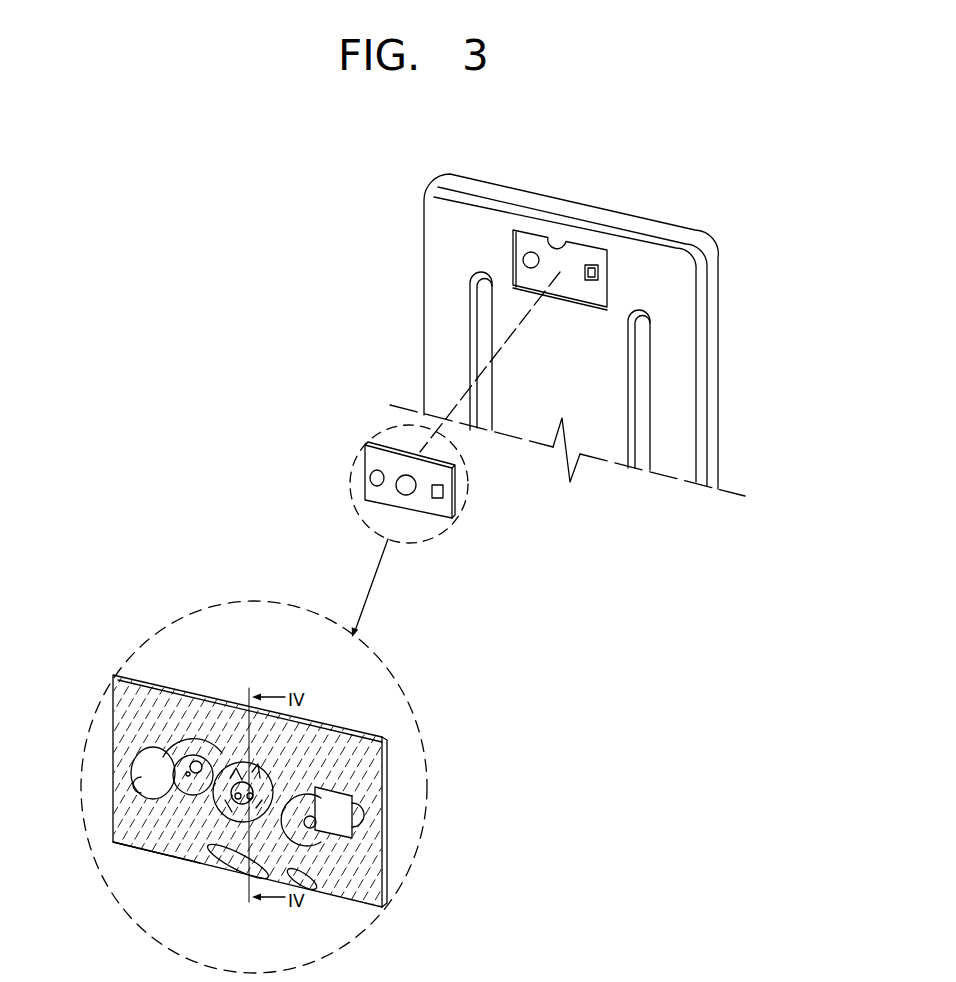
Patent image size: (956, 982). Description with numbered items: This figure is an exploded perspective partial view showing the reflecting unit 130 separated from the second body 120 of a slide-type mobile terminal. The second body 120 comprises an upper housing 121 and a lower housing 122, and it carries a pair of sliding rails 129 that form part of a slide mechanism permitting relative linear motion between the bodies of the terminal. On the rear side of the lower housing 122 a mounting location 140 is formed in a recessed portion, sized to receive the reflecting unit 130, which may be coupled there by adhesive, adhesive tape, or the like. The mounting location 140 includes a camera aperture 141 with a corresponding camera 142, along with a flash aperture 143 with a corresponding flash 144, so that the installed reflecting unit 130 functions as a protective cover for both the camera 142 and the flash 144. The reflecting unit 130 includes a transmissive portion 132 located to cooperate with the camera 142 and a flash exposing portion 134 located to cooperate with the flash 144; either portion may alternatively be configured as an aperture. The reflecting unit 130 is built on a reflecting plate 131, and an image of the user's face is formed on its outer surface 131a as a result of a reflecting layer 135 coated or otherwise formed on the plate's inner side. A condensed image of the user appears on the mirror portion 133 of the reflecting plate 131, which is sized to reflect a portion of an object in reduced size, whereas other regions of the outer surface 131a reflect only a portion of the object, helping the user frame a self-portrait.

The second body 120 is at (735, 435).
The upper housing 121 is at (718, 278).
The lower housing 122 is at (703, 310).
The sliding rails 129 is at (482, 353).
The reflecting unit 130 is at (476, 498).
The reflecting plate 131 is at (385, 759).
The outer surface 131a is at (131, 843).
The transmissive portion 132 is at (375, 483).
The mirror portion 133 is at (407, 497).
The flash exposing portion 134 is at (437, 498).
The reflecting layer 135 is at (313, 887).
The mounting location 140 is at (566, 242).
The camera aperture 141 is at (523, 260).
The camera 142 is at (528, 251).
The flash aperture 143 is at (599, 271).
The flash 144 is at (593, 266).